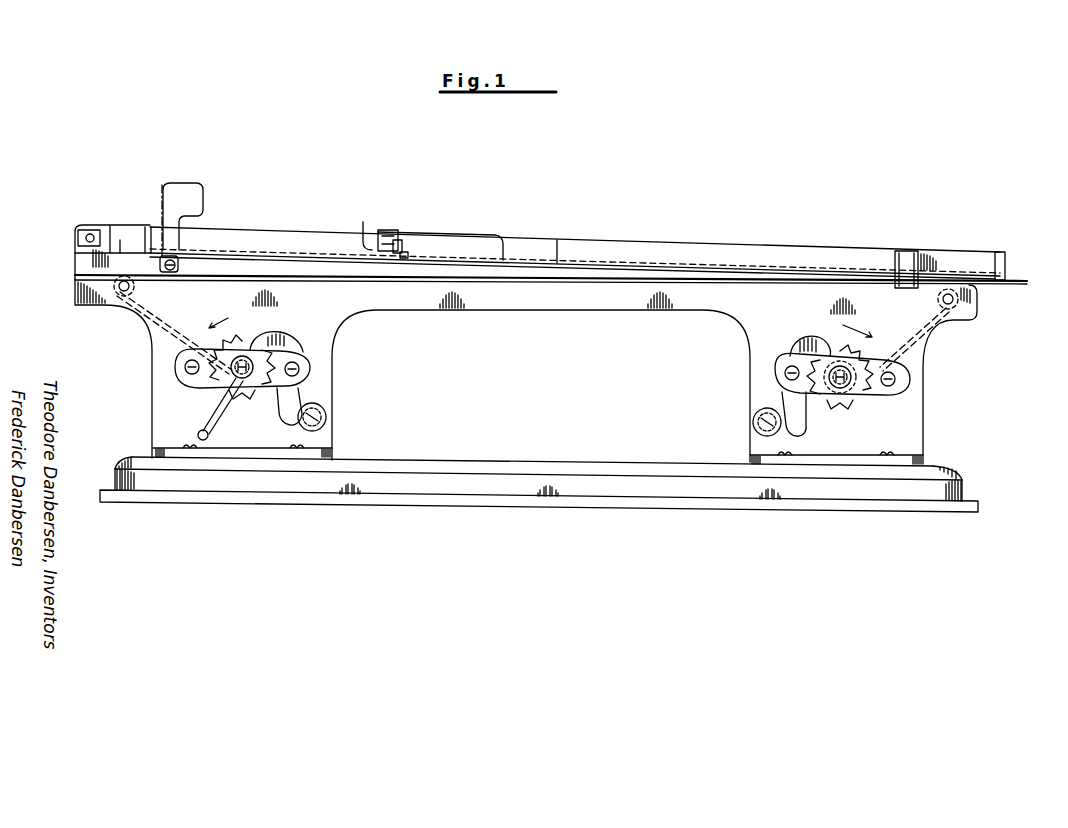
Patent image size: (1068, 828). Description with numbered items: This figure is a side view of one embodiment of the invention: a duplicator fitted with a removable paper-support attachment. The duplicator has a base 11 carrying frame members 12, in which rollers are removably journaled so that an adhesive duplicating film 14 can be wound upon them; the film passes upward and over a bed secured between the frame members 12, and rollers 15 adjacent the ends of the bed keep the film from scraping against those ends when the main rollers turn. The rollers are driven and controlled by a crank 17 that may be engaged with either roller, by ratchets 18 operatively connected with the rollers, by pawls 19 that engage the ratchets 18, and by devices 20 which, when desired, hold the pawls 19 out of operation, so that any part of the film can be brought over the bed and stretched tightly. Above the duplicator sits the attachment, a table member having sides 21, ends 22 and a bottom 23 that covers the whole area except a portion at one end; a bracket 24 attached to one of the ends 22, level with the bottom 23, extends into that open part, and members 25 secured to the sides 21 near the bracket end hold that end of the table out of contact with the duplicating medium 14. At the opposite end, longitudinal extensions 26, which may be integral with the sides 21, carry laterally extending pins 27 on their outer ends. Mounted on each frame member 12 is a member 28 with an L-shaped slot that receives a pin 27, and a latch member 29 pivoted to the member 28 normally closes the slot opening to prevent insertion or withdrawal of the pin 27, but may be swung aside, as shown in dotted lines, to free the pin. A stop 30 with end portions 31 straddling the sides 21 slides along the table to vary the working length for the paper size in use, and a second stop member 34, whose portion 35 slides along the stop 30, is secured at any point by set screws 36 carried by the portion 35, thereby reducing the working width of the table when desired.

The base 11 is at (573, 500).
The frame members 12 is at (160, 409).
The adhesive duplicating film 14 is at (928, 341).
The rollers 15 is at (131, 287).
The crank 17 is at (220, 418).
The ratchets 18 is at (236, 340).
The pawls 19 is at (300, 345).
The devices 20 is at (327, 418).
The sides 21 is at (624, 248).
The ends 22 is at (149, 236).
The bottom 23 is at (558, 240).
The bracket 24 is at (1000, 252).
The members 25 is at (898, 252).
The longitudinal extensions 26 is at (130, 240).
The pins 27 is at (86, 241).
The member 28 is at (80, 262).
The latch members 29 is at (174, 270).
The stop 30 is at (403, 244).
The end portions 31 is at (356, 230).
The second stop member 34 is at (470, 236).
The portion 35 is at (382, 231).
The set screws 36 is at (406, 254).